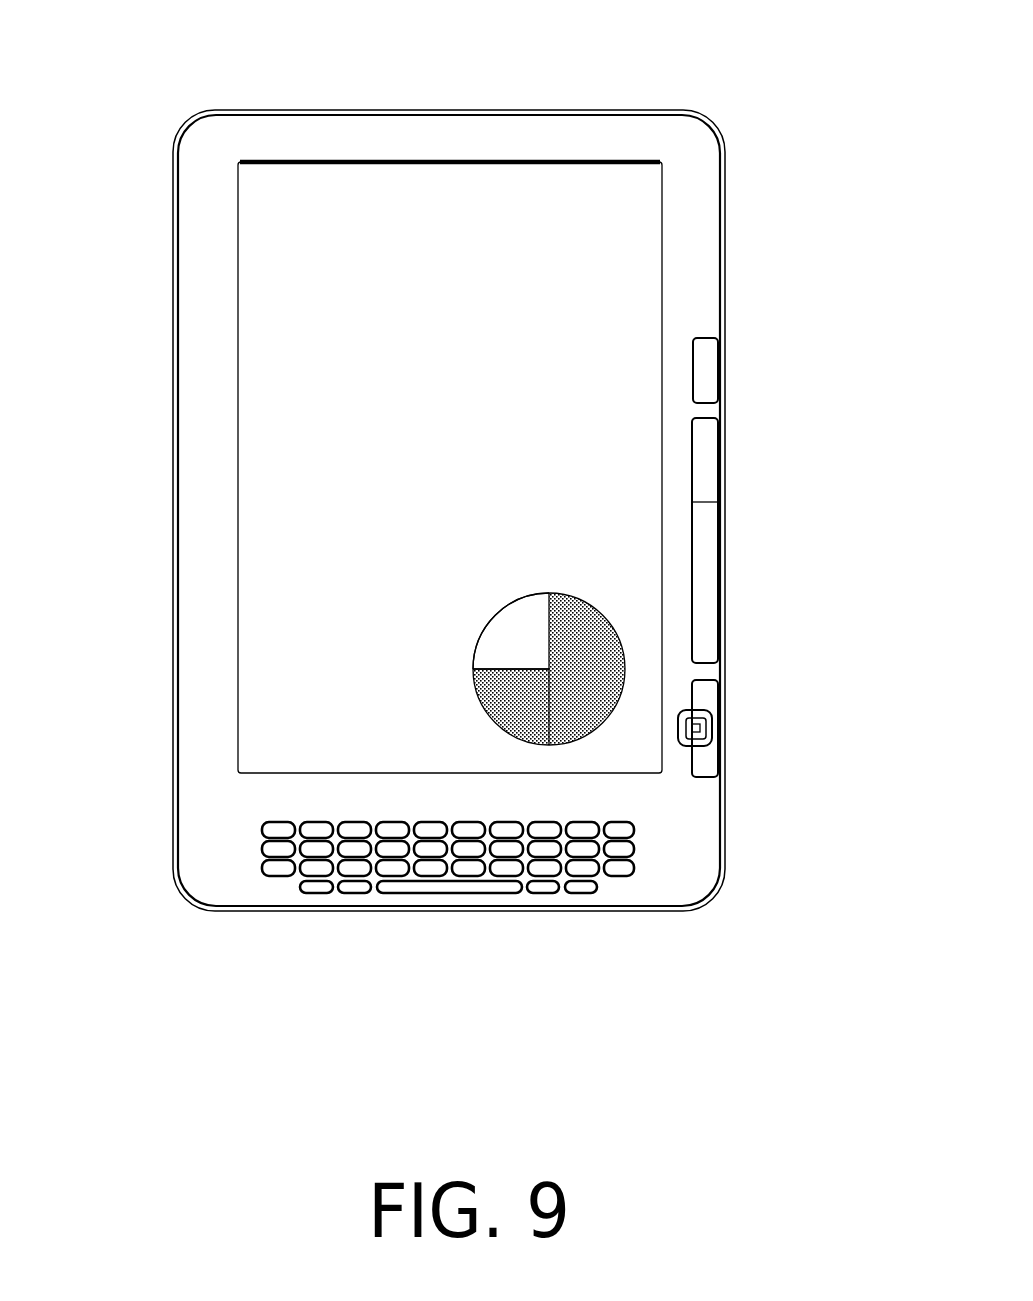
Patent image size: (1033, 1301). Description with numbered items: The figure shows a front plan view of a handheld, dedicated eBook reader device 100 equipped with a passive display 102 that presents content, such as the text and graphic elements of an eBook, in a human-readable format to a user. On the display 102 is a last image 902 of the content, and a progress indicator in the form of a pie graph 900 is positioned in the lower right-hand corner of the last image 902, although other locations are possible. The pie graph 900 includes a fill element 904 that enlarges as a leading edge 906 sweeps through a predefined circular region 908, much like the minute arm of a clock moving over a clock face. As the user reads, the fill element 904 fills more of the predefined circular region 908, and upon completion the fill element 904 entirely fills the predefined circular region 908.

The eBook reader device 100 is at (327, 70).
The display 102 is at (485, 155).
The last image 902 is at (293, 283).
The pie graph 900 is at (525, 642).
The fill element 904 is at (575, 640).
The leading edge 906 is at (503, 672).
The predefined circular region 908 is at (538, 592).